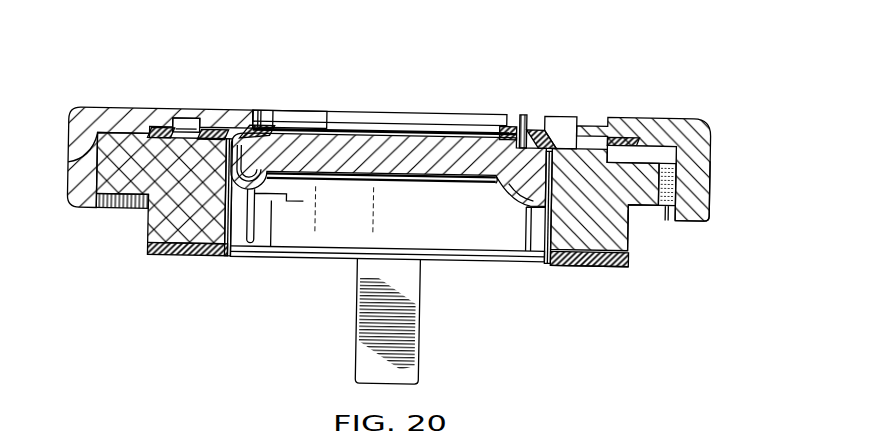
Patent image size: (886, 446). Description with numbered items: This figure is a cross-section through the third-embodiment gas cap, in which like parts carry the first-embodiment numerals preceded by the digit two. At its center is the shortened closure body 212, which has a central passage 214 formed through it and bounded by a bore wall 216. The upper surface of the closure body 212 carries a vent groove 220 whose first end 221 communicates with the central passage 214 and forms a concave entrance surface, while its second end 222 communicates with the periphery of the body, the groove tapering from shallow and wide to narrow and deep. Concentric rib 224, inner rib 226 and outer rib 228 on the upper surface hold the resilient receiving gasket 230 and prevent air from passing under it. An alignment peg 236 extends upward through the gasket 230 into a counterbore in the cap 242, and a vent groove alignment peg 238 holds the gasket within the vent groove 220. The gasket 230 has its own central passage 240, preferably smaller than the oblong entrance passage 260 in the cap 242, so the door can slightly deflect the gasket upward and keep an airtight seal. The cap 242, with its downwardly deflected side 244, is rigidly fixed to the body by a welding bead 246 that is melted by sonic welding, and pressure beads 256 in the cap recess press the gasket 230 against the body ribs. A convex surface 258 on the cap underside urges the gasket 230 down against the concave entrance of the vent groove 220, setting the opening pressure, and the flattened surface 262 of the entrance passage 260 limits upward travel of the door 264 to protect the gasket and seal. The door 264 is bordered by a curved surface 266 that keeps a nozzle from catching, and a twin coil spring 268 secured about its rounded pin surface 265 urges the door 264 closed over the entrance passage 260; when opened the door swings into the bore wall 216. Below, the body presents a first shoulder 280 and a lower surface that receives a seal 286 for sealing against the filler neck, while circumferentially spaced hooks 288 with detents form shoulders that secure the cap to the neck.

The closure body 212 is at (566, 274).
The central passage 214 is at (303, 236).
The bore wall 216 is at (546, 262).
The vent groove 220 is at (631, 160).
The first end of vent groove 221 is at (629, 237).
The second end of vent groove 222 is at (671, 167).
The concentric rib 224 is at (166, 255).
The inner rib 226 is at (152, 223).
The outer rib 228 is at (112, 205).
The receiving gasket 230 is at (497, 177).
The alignment peg 236 is at (183, 122).
The vent groove alignment peg 238 is at (597, 125).
The gasket central passage 240 is at (370, 121).
The cap 242 is at (667, 118).
The downwardly deflected side 244 is at (711, 184).
The welding bead 246 is at (122, 130).
The pressure beads 256 is at (242, 136).
The convex surface 258 is at (546, 139).
The entrance passage 260 is at (345, 110).
The flattened surface 262 is at (507, 125).
The door 264 is at (403, 143).
The rounded pin surface 265 is at (273, 123).
The curved surface 266 is at (540, 137).
The twin coil spring 268 is at (207, 256).
The first shoulder 280 is at (629, 243).
The seal 286 is at (607, 268).
The hooks 288 is at (418, 368).